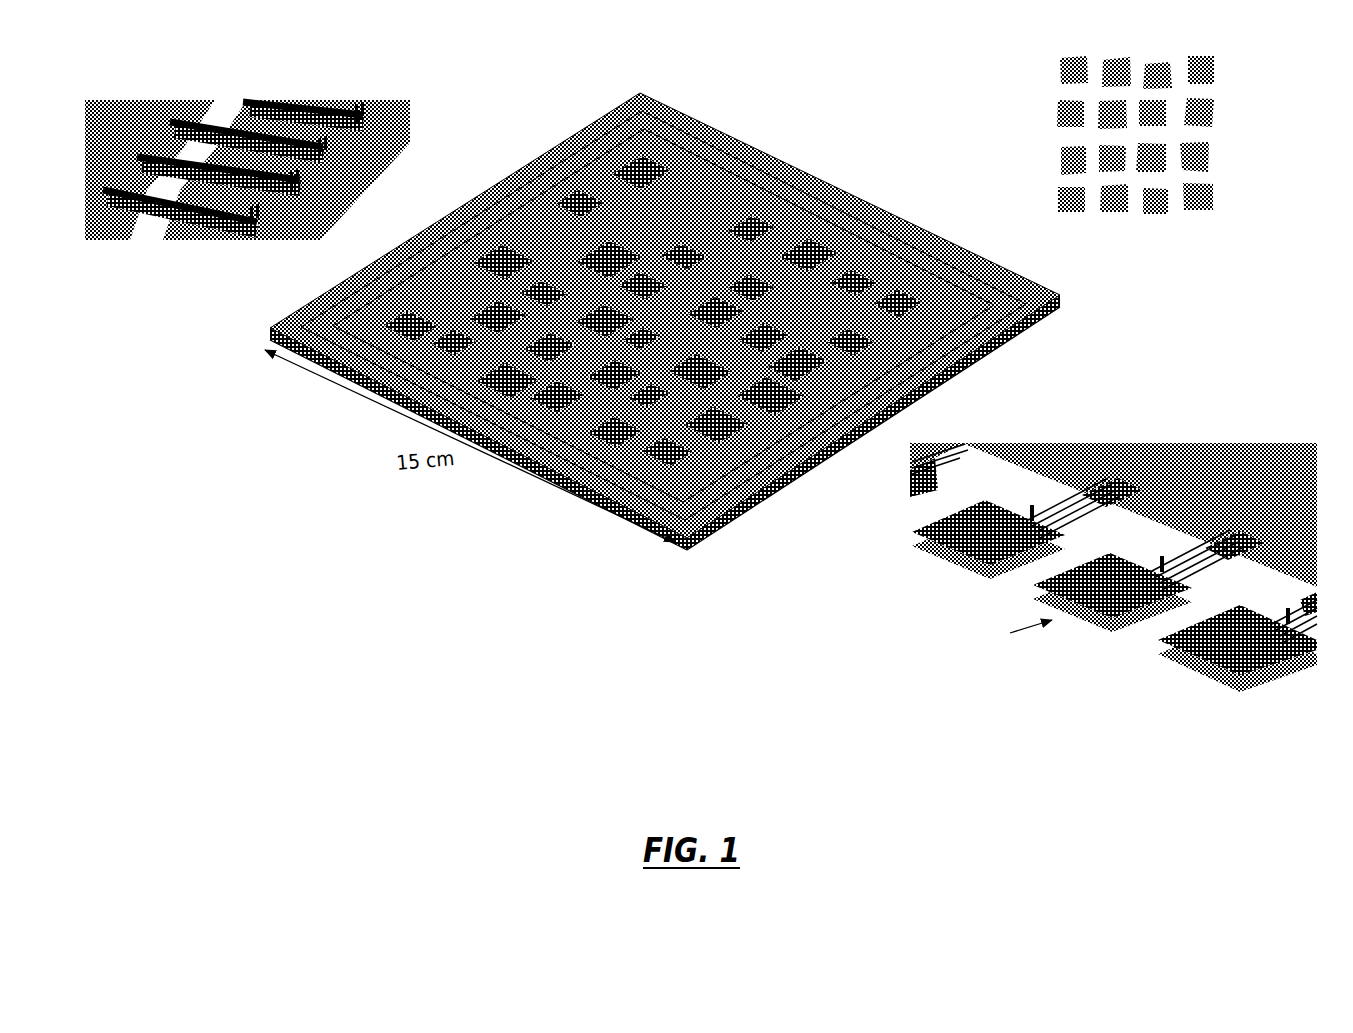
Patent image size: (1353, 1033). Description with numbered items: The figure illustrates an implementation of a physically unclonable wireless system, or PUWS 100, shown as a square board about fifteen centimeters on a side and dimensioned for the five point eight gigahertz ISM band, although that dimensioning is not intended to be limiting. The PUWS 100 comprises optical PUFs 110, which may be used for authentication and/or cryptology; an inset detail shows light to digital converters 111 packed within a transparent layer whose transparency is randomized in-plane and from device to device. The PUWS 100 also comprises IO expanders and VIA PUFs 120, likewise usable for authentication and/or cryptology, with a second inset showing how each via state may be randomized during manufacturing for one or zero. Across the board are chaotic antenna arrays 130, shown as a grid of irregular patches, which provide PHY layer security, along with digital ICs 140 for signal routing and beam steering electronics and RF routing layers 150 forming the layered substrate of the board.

The physically unclonable wireless system (PUWS) 100 is at (709, 784).
The optical PUFs 110 is at (610, 205).
The light to digital converters 111 is at (232, 236).
The IO expanders and VIA PUFs 120 is at (847, 355).
The chaotic antenna arrays 130 is at (1057, 157).
The digital ICs 140 is at (597, 425).
The beam steering electronics and RF routing layers 150 is at (395, 345).